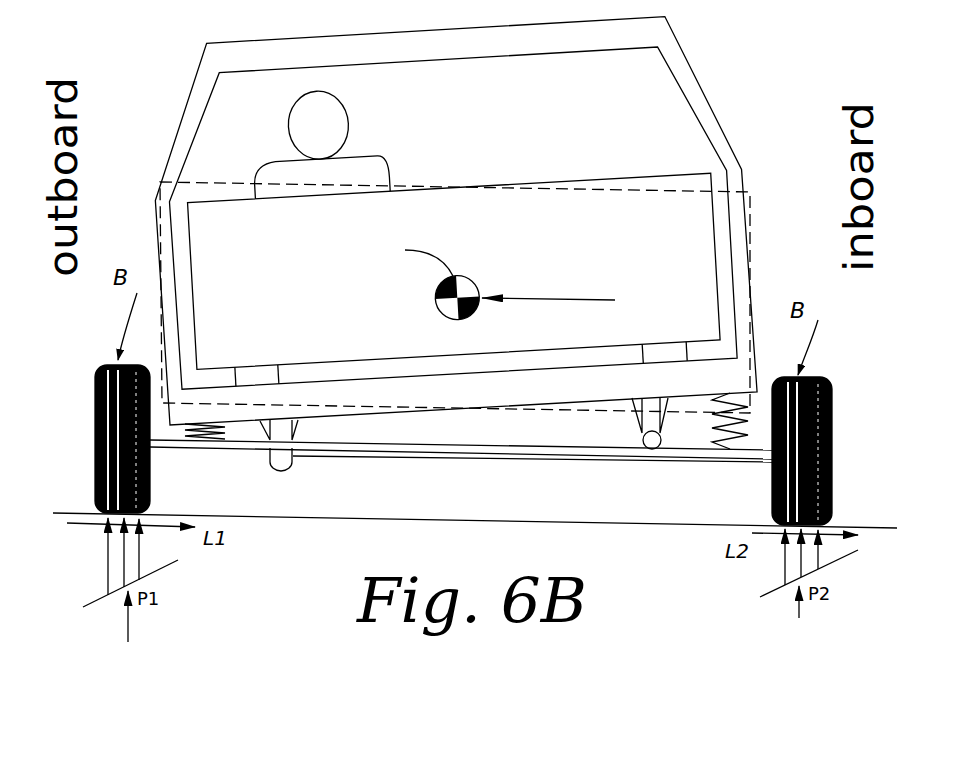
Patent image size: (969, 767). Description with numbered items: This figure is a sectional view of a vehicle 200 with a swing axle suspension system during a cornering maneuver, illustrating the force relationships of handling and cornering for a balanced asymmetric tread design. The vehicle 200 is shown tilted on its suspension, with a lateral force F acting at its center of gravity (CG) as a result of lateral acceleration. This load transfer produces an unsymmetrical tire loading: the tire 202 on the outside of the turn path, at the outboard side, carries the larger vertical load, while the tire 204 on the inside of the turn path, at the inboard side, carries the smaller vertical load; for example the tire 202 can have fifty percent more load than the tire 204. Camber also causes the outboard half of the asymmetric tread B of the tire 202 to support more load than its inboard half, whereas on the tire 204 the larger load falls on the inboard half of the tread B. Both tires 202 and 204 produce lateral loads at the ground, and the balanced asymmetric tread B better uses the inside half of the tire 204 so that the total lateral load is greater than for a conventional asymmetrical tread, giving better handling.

The vehicle 200 is at (752, 212).
The tire 202 is at (86, 406).
The tire 204 is at (847, 409).